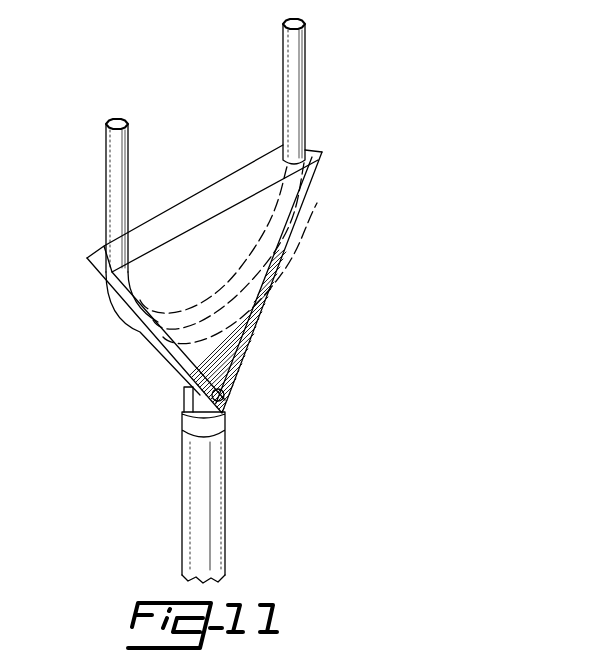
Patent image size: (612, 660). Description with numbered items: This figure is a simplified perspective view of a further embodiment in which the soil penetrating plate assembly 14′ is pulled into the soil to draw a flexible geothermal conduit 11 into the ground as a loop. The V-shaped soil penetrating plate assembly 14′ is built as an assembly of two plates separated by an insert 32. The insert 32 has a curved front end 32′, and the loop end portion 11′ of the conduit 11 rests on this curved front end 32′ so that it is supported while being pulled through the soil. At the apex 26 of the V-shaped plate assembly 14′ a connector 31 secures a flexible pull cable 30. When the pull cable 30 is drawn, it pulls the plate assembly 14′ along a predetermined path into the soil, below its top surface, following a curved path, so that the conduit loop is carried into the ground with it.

The rod / pole 11 is at (122, 152).
The loop end portion 11′ is at (270, 263).
The soil penetrating plate assembly 14′ is at (240, 318).
The apex 26 is at (187, 383).
The flexible pull cable 30 is at (210, 472).
The connector 31 is at (226, 396).
The insert 32 is at (248, 177).
The curved front end 32′ is at (317, 203).